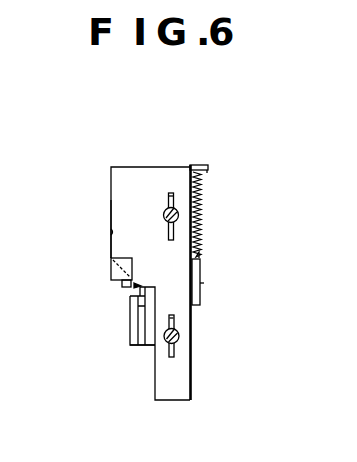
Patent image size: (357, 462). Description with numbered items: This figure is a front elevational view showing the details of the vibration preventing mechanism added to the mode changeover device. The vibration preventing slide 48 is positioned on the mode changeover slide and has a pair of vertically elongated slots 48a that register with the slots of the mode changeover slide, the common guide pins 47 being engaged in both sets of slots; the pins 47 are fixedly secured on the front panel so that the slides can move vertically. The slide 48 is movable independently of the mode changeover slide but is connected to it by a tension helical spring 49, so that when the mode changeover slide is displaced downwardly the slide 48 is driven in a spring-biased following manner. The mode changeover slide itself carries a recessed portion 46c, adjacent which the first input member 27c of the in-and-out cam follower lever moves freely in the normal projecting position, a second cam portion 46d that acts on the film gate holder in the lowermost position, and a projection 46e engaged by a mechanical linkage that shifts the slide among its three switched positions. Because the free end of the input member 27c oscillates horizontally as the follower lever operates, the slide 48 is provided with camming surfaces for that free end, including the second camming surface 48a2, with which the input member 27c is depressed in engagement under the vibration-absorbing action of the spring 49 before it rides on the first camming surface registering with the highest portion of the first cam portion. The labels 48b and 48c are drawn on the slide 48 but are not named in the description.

The vibration preventing slide 48 is at (147, 206).
The vertically elongated slots 48a is at (111, 232).
The second camming surface 48a2 is at (111, 275).
The first input member 27c is at (121, 286).
The screw slot of guide plate 48b is at (171, 193).
The engaging projection 48c is at (137, 287).
The guide pins 47 is at (179, 216).
The tension helical spring 49 is at (200, 236).
The recessed portion 46c is at (141, 292).
The second cam portion 46d is at (138, 347).
The projection 46e is at (204, 283).